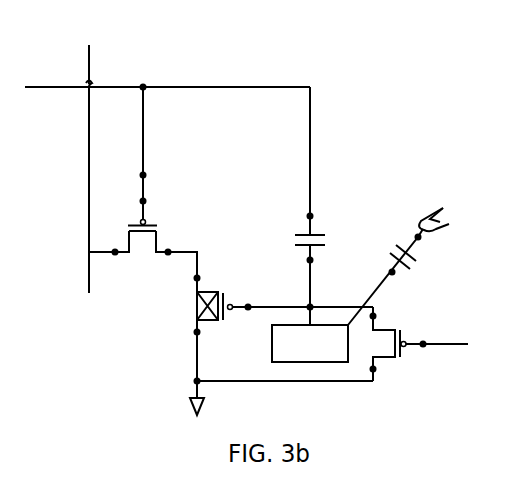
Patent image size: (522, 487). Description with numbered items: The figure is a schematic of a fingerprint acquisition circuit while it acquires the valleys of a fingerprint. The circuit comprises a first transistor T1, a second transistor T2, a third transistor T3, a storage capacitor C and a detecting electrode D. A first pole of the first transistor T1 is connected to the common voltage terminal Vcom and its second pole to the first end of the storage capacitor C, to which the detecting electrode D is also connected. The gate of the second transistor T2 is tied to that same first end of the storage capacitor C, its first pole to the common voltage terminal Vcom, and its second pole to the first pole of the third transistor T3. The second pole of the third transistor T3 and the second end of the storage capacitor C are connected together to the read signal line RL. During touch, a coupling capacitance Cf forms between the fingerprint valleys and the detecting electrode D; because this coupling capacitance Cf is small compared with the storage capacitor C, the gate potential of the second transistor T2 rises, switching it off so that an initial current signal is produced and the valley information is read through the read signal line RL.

The read signal line RL is at (167, 153).
The third transistor T3 is at (145, 188).
The second transistor T2 is at (284, 331).
The first transistor T1 is at (419, 347).
The storage capacitor C is at (321, 206).
The coupling capacitance Cf is at (398, 266).
The detecting electrode D is at (310, 343).
The common voltage terminal Vcom is at (281, 398).